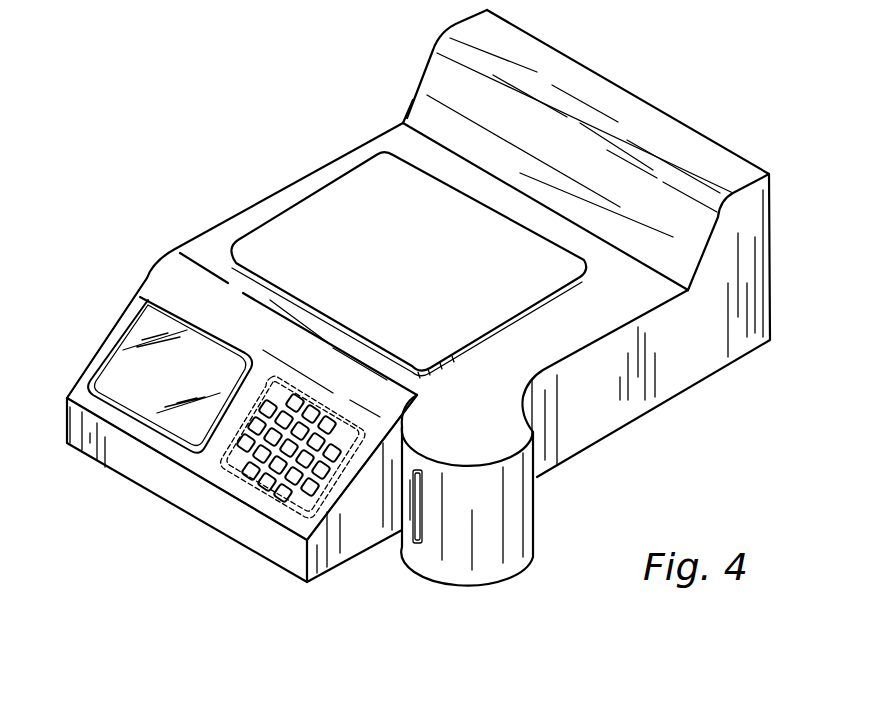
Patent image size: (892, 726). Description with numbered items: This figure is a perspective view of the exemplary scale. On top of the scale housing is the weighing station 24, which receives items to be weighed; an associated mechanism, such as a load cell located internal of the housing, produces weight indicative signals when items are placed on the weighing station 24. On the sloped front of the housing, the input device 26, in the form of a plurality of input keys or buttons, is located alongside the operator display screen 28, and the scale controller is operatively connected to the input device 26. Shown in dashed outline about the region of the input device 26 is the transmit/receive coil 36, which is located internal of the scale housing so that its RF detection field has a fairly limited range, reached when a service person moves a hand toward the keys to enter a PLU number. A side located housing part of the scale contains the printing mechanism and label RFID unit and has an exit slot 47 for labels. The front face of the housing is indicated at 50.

The weighing station 24 is at (380, 225).
The operator display screen 28 is at (172, 375).
The input device 26 is at (250, 483).
The transmit/receive coil 36 is at (283, 507).
The housing front face 50 is at (180, 487).
The exit slot 47 is at (420, 503).